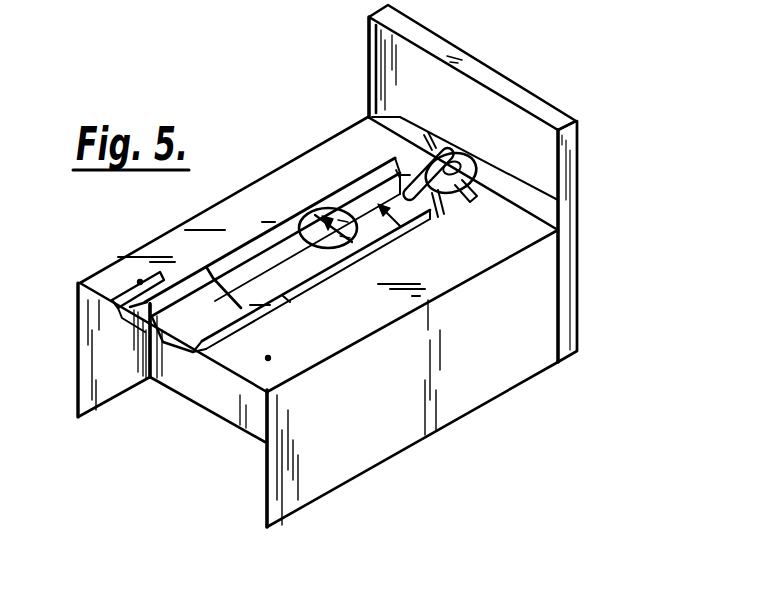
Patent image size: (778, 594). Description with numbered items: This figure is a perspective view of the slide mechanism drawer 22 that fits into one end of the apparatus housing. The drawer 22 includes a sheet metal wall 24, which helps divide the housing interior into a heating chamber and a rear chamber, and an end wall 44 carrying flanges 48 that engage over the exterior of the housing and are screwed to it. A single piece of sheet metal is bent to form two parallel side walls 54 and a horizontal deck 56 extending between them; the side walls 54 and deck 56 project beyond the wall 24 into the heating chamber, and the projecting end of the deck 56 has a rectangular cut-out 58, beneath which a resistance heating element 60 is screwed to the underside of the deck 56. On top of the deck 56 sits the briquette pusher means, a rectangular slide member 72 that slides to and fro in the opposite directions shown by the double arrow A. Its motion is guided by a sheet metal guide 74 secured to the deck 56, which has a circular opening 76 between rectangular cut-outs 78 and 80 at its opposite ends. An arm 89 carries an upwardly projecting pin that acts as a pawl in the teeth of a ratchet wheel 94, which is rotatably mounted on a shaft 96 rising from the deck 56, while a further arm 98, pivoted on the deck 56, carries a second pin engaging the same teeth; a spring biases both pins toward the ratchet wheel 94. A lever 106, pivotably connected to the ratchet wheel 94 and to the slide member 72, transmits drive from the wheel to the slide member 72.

The drawer 22 is at (598, 282).
The sheet metal wall 24 is at (202, 400).
The end wall 44 is at (546, 160).
The flanges 48 is at (368, 76).
The side walls 54 is at (94, 350).
The deck 56 is at (214, 222).
The rectangular cut-out 58 is at (133, 300).
The resistance heating element 60 is at (152, 296).
The slide member 72 is at (372, 178).
The guide 74 is at (275, 242).
The circular opening 76 is at (310, 212).
The rectangular cut-out 78 is at (388, 175).
The rectangular cut-out 80 is at (212, 272).
The arm 89 is at (430, 135).
The ratchet wheel 94 is at (472, 160).
The shaft 96 is at (460, 147).
The arm 98 is at (471, 186).
The lever 106 is at (447, 203).
The double arrow A is at (392, 222).